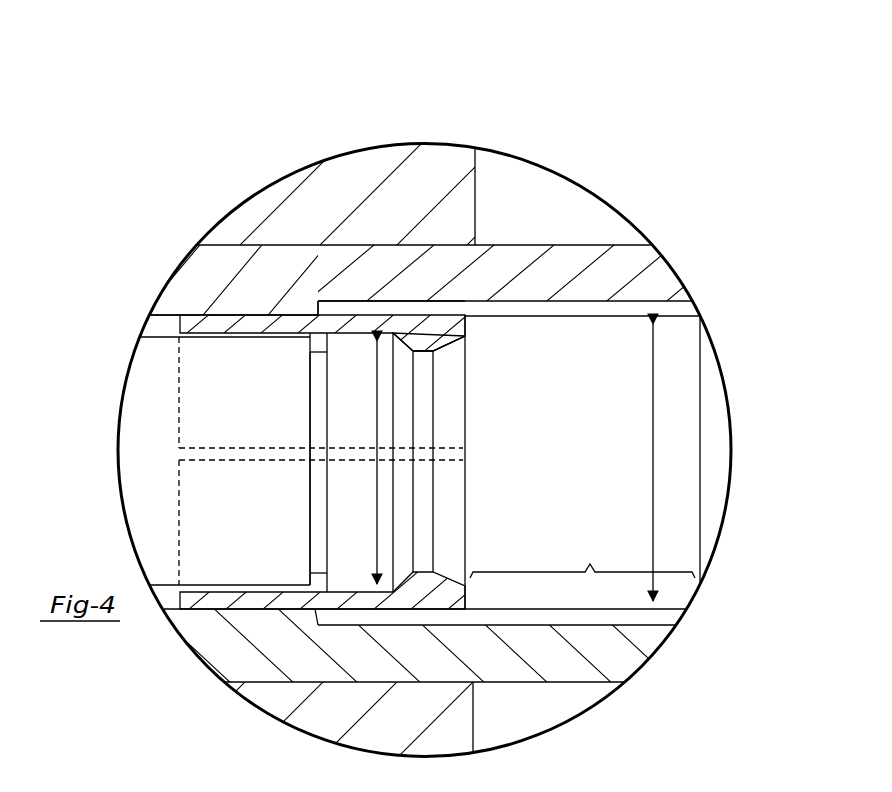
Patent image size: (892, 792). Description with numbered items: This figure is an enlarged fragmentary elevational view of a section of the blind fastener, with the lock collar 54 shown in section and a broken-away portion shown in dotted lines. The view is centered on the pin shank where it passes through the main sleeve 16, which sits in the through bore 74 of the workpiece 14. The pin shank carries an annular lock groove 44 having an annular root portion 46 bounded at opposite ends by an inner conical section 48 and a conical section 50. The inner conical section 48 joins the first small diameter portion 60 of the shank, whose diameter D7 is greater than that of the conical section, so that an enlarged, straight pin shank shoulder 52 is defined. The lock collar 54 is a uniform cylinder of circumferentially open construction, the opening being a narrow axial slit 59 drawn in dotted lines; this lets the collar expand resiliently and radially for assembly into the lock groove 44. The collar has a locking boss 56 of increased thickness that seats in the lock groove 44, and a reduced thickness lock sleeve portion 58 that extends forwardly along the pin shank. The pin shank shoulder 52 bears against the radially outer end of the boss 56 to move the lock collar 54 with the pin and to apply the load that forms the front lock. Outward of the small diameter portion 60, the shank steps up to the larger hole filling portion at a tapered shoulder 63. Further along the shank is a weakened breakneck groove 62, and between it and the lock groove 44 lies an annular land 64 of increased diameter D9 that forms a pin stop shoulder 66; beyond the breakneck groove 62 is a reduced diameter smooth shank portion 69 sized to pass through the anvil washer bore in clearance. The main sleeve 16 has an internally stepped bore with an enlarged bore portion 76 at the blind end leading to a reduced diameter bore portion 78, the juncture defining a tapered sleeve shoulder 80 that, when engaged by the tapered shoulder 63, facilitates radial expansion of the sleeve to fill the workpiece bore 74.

The workpiece 14 is at (432, 152).
The main sleeve 16 is at (622, 264).
The lock groove 44 is at (432, 432).
The root portion 46 is at (430, 548).
The inner conical section 48 is at (452, 385).
The conical section 50 is at (403, 410).
The pin shank shoulder 52 is at (463, 512).
The lock collar 54 is at (355, 612).
The locking boss 56 is at (430, 335).
The lock sleeve portion 58 is at (252, 320).
The axial slit 59 is at (245, 447).
The first small diameter portion 60 is at (582, 556).
The breakneck groove 62 is at (317, 537).
The tapered shoulder 63 is at (722, 426).
The annular land 64 is at (338, 485).
The pin stop shoulder 66 is at (320, 526).
The smooth shank portion 69 is at (143, 392).
The through bore 74 is at (380, 245).
The enlarged bore portion 76 is at (582, 625).
The reduced diameter bore portion 78 is at (157, 323).
The tapered sleeve shoulder 80 is at (324, 305).
The diameter of small diameter pin shank portion D7 is at (658, 462).
The diameter of annular land D9 is at (376, 462).